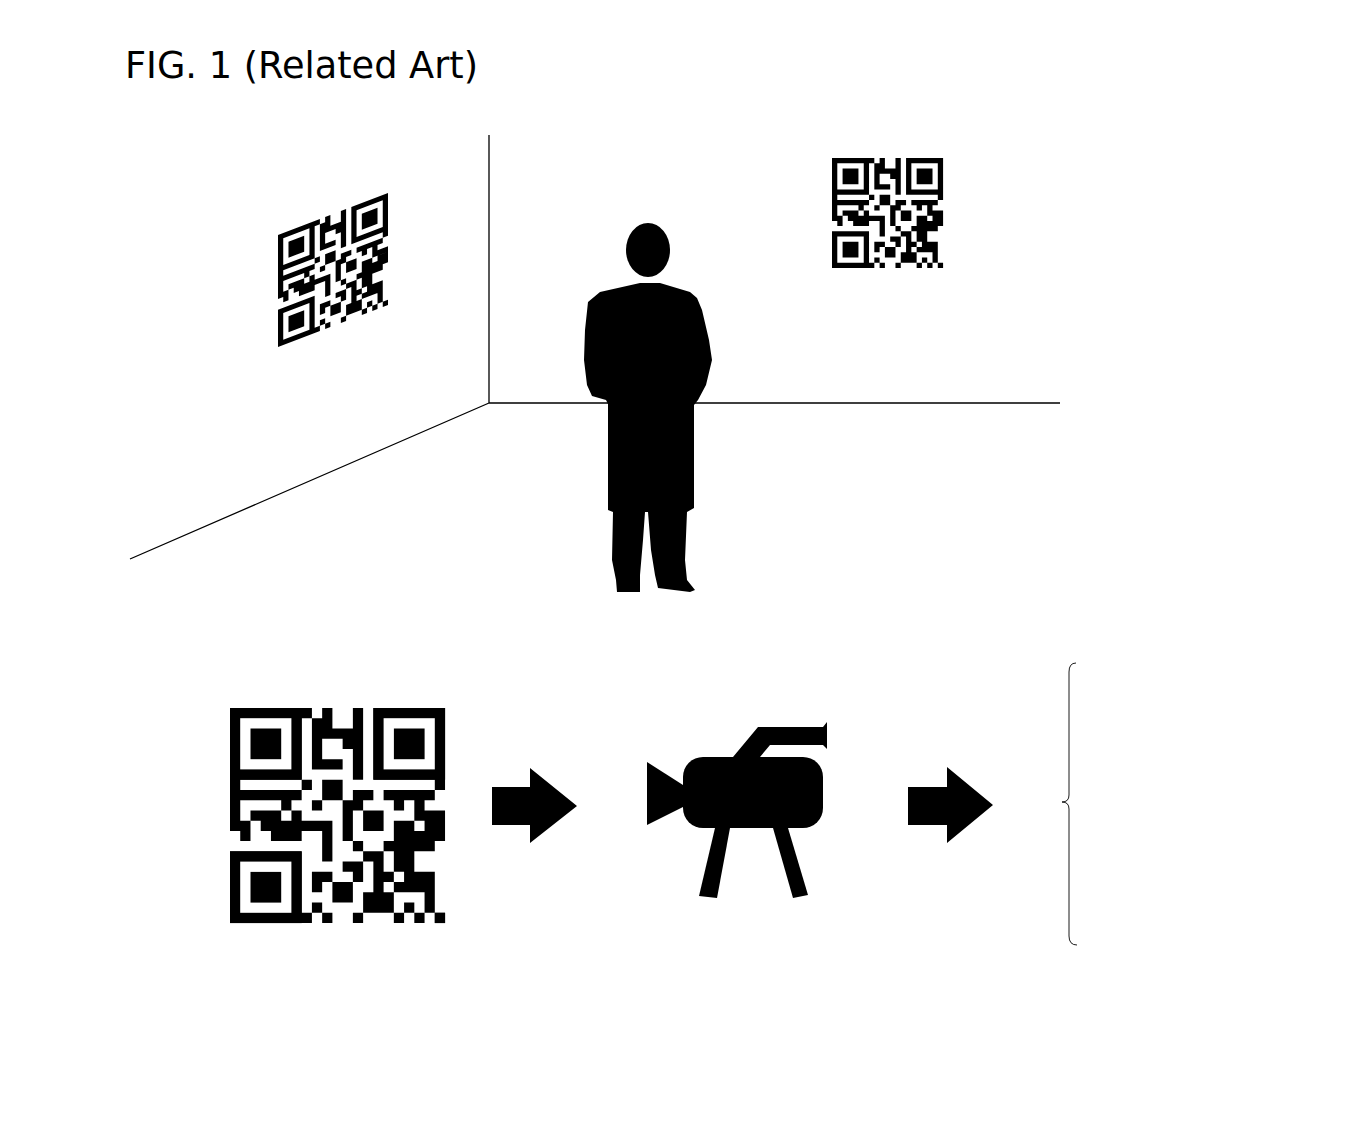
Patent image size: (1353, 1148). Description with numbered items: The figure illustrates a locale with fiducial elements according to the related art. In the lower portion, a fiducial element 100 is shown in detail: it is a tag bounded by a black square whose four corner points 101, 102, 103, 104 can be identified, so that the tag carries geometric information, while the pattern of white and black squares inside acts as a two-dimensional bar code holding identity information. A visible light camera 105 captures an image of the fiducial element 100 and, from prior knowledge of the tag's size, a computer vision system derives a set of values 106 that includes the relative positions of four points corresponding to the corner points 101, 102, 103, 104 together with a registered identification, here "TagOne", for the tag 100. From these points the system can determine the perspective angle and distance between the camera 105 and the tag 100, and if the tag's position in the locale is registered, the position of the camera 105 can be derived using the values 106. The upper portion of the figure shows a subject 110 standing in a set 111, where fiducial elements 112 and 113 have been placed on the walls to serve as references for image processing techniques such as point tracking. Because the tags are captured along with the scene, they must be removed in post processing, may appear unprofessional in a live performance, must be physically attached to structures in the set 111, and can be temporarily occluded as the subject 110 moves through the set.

The fiducial element 100 is at (329, 810).
The corner point 101 is at (253, 743).
The corner point 102 is at (423, 743).
The corner point 103 is at (250, 887).
The corner point 104 is at (420, 903).
The visible light camera 105 is at (765, 694).
The set of values 106 is at (1220, 692).
The subject 110 is at (630, 268).
The set 111 is at (522, 451).
The fiducial element 112 is at (943, 222).
The fiducial element 113 is at (278, 275).